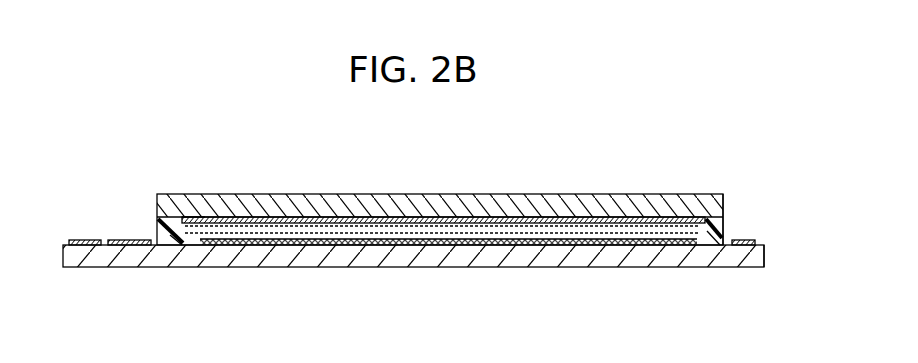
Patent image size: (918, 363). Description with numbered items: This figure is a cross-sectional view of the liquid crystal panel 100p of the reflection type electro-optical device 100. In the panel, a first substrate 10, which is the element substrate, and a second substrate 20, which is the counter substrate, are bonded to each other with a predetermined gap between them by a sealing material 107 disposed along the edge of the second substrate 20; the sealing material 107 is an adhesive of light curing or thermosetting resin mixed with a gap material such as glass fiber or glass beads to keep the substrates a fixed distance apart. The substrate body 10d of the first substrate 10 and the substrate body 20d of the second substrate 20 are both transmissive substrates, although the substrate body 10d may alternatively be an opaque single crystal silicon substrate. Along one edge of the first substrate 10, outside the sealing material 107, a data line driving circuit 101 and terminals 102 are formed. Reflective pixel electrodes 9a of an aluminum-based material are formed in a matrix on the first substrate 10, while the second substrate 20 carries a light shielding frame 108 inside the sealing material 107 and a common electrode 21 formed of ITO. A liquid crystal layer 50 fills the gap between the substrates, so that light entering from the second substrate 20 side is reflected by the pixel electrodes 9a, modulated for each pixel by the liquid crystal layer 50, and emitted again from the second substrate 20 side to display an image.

The electro-optical device 100 is at (626, 155).
The liquid crystal panel 100p is at (445, 234).
The first substrate 10 is at (665, 258).
The substrate body 10d is at (762, 256).
The second substrate 20 is at (668, 196).
The substrate body 20d is at (708, 205).
The common electrode 21 is at (390, 219).
The frame 108 is at (196, 219).
The liquid crystal layer 50 is at (496, 232).
The pixel electrode 9a is at (360, 244).
The sealing material 107 is at (173, 242).
The data line driving circuit 101 is at (130, 241).
The terminal 102 is at (81, 241).